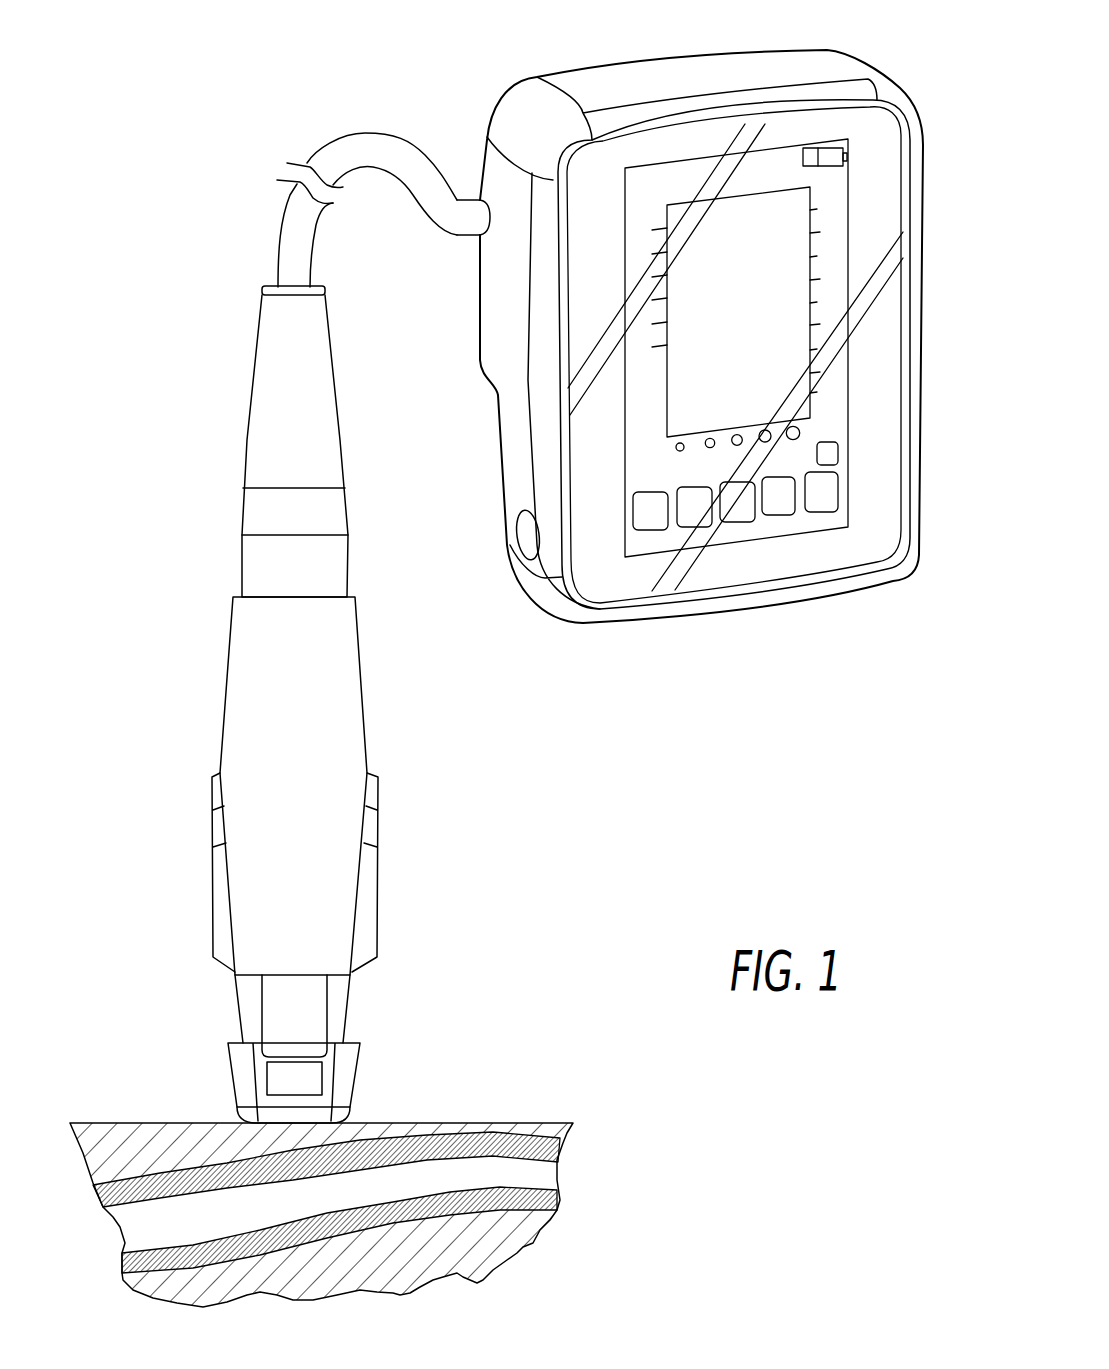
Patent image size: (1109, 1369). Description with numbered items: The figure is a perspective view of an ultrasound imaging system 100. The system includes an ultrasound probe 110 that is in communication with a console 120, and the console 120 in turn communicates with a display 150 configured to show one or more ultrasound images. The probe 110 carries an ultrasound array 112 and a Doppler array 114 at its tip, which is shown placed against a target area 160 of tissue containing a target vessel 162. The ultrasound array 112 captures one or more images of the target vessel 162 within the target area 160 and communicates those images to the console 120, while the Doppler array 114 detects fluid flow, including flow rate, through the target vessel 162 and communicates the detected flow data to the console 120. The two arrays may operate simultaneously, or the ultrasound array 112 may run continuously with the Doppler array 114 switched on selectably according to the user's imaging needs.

The ultrasound imaging system 100 is at (266, 126).
The ultrasound probe 110 is at (194, 625).
The ultrasound array 112 is at (214, 1066).
The Doppler array 114 is at (376, 1091).
The console 120 is at (942, 275).
The display 150 is at (837, 383).
The target area 160 is at (149, 1090).
The target vessel 162 is at (137, 1226).